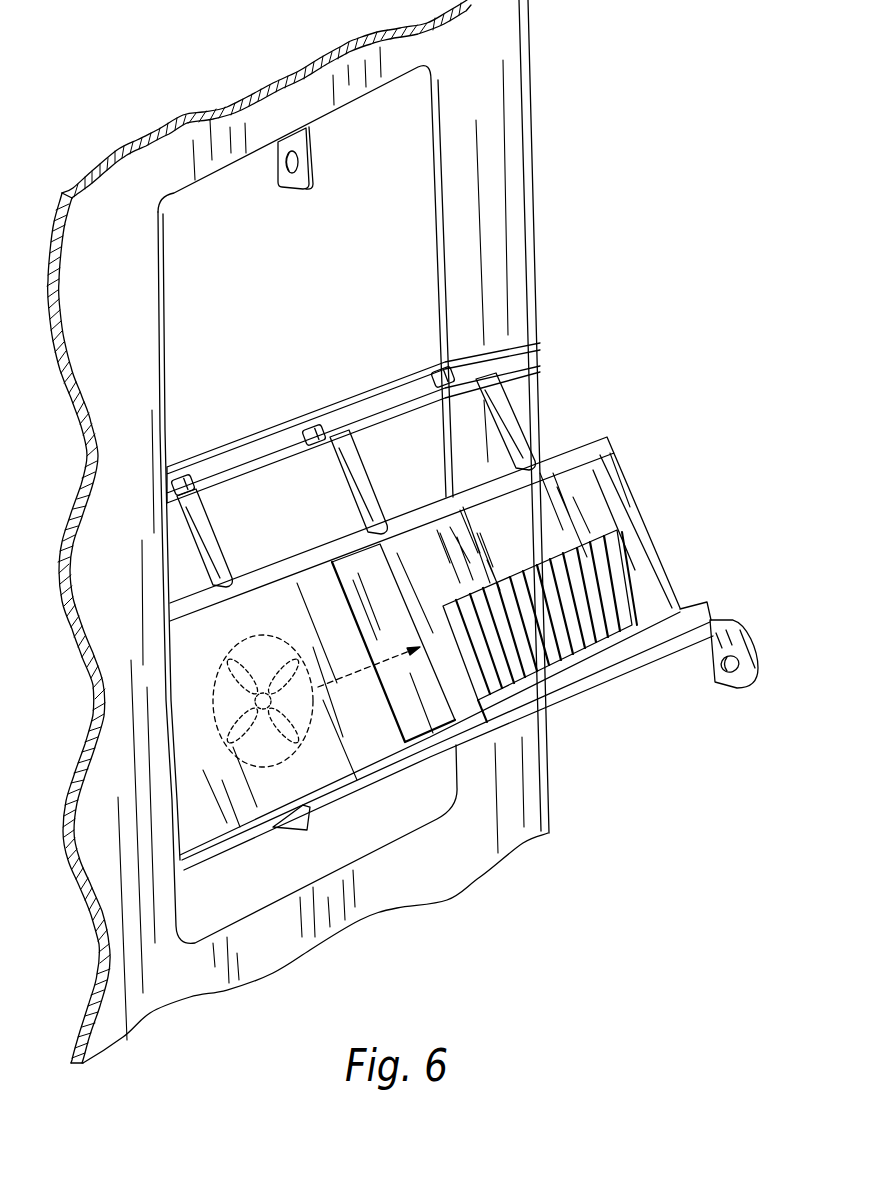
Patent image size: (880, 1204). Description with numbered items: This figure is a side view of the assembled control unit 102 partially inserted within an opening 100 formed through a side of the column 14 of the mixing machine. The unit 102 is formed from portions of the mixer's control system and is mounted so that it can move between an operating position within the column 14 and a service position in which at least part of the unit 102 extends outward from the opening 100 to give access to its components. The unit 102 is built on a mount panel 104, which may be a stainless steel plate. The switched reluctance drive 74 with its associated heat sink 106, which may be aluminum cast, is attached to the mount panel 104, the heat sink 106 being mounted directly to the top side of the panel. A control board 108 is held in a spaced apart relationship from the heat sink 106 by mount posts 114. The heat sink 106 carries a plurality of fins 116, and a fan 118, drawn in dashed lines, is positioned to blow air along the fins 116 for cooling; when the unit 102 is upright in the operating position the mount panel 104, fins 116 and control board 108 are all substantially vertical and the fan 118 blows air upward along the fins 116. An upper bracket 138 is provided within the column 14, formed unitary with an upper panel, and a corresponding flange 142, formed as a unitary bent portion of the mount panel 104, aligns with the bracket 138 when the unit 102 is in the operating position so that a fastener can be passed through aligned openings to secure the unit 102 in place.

The column 14 is at (490, 92).
The opening 100 is at (430, 208).
The upper bracket 138 is at (285, 189).
The control board 108 is at (483, 355).
The mount posts 114 is at (515, 420).
The unit 102 is at (462, 559).
The switched reluctance drive 74 is at (464, 637).
The heat sink 106 is at (607, 503).
The fins 116 is at (560, 640).
The fan 118 is at (268, 656).
The mount panel 104 is at (593, 687).
The flange 142 is at (723, 682).